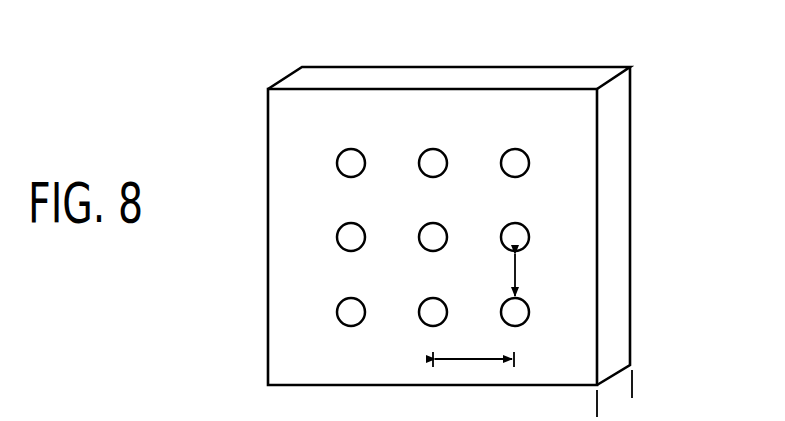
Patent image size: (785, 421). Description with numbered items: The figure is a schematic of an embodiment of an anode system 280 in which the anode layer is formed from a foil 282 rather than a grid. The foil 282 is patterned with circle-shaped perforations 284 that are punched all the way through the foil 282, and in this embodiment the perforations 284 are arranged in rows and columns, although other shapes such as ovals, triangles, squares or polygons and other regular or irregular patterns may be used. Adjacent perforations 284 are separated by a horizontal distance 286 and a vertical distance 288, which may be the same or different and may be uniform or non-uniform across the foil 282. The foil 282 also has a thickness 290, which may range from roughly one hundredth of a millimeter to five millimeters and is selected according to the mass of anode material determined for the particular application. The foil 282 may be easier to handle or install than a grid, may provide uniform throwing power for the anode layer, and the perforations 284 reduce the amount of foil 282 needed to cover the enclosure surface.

The anode system 280 is at (520, 215).
The foil 282 is at (527, 113).
The circle-shaped perforations 284 is at (515, 163).
The horizontal distance 286 is at (473, 361).
The vertical distance 288 is at (520, 275).
The thickness 290 is at (601, 401).